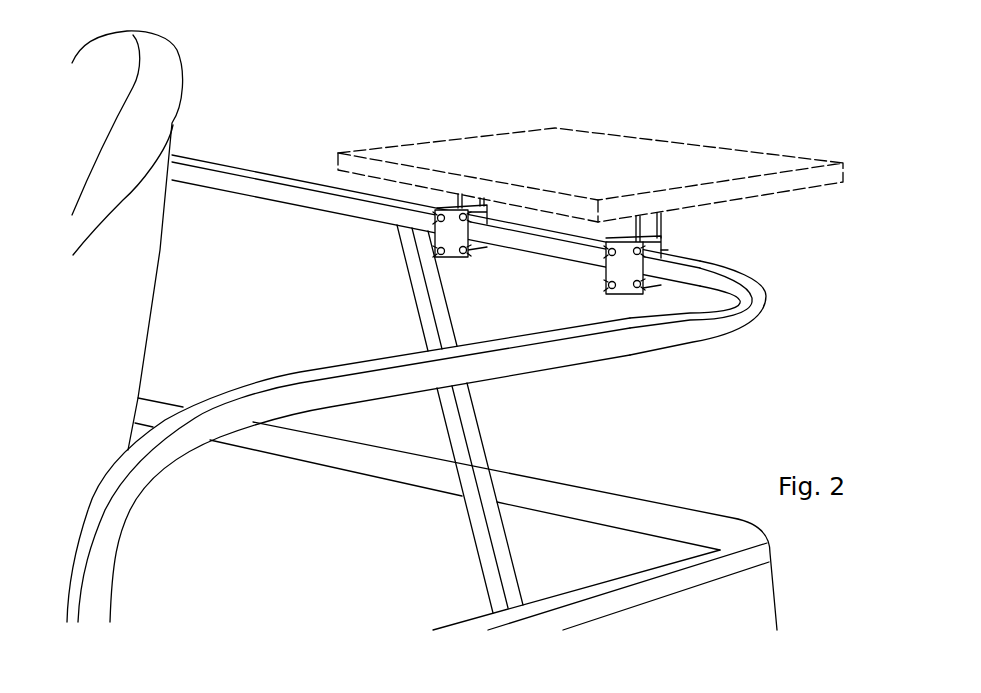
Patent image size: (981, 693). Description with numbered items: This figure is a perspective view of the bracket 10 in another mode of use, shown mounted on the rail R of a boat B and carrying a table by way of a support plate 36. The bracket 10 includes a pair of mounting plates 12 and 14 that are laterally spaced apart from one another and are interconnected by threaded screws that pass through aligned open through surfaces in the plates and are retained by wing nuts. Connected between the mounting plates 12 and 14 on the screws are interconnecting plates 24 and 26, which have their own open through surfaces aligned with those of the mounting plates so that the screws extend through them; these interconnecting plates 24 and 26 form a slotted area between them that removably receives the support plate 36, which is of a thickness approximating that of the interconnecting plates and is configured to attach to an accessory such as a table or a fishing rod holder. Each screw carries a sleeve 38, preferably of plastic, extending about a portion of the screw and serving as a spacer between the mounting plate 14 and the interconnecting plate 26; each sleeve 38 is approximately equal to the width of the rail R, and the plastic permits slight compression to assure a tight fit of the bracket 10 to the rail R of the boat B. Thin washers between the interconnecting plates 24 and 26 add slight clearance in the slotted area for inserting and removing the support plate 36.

The bracket 10 is at (596, 189).
The mounting plate 12 is at (700, 258).
The mounting plate 14 is at (607, 277).
The interconnecting plate 24 is at (668, 253).
The interconnecting plate 26 is at (672, 248).
The support plate 36 is at (662, 230).
The sleeve 38 is at (709, 321).
The rail R is at (773, 301).
The boat B is at (127, 240).